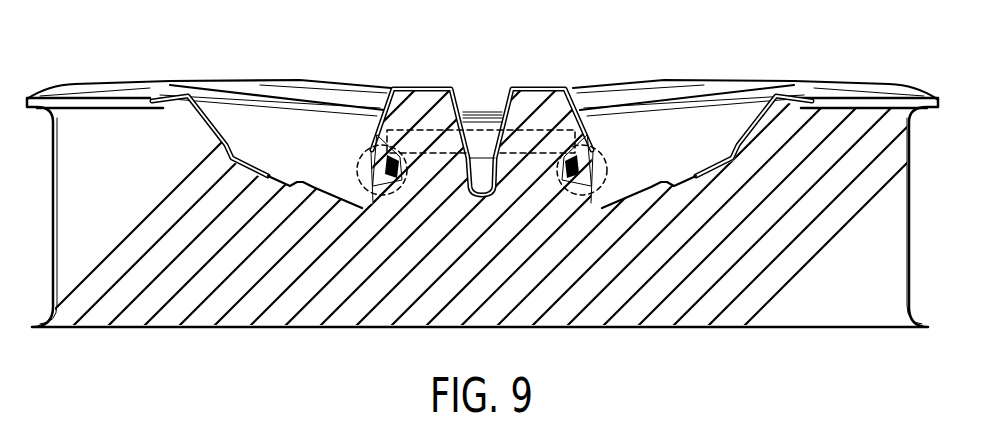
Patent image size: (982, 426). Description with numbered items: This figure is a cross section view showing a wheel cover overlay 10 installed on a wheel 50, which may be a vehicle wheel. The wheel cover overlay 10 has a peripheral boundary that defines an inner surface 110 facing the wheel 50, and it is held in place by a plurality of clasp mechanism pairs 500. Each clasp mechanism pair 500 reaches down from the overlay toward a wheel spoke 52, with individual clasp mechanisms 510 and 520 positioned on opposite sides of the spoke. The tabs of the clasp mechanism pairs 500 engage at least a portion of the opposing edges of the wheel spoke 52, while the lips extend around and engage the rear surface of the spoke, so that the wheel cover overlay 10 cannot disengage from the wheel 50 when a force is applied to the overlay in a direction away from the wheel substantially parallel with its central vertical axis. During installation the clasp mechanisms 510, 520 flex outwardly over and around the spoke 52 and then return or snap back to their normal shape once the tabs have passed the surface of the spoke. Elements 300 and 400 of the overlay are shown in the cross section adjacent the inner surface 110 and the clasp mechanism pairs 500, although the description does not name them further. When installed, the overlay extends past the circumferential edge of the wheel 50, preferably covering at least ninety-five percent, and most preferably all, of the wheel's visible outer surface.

The wheel cover overlay 10 is at (720, 82).
The wheel 50 is at (912, 278).
The wheel spoke 52 is at (436, 132).
The inner surface 110 is at (540, 98).
The trim cover panel 300 is at (255, 105).
The guide strip 400 is at (195, 82).
The clasp mechanism pairs 500 is at (397, 197).
The first clip 510 is at (372, 168).
The second clip 520 is at (592, 168).